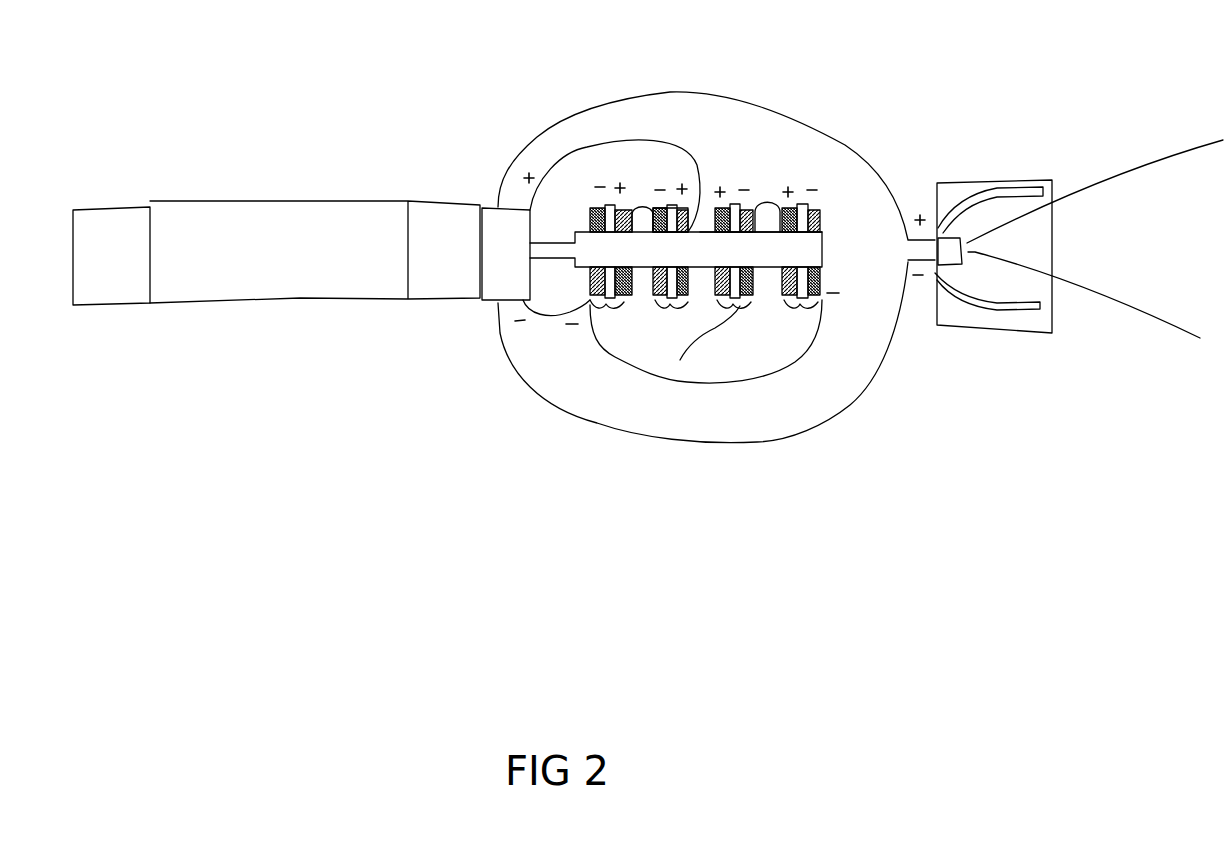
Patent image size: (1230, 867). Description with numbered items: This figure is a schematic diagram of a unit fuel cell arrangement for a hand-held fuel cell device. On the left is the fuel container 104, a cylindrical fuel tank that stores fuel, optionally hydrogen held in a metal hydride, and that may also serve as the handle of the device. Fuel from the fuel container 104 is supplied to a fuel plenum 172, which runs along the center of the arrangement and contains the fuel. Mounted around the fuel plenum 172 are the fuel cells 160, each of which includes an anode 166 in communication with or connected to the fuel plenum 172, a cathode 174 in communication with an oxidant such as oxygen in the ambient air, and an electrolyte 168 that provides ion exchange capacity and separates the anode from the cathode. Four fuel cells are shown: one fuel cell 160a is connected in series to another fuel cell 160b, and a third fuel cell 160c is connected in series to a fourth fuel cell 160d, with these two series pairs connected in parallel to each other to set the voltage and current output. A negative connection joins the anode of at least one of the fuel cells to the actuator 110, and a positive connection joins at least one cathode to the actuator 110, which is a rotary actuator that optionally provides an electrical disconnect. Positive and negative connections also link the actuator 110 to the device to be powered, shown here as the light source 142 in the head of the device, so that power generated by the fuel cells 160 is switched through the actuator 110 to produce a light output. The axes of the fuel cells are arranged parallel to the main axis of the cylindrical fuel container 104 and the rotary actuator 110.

The fuel container 104 is at (240, 200).
The actuator 110 is at (492, 302).
The light source 142 is at (957, 258).
The fuel cell 160 is at (670, 307).
The fuel cell 160a is at (592, 305).
The fuel cell 160b is at (668, 305).
The third fuel cell 160c is at (740, 306).
The fourth fuel cell 160d is at (797, 300).
The anode 166 is at (828, 235).
The electrolyte 168 is at (800, 204).
The fuel plenum 172 is at (815, 255).
The cathode 174 is at (777, 203).